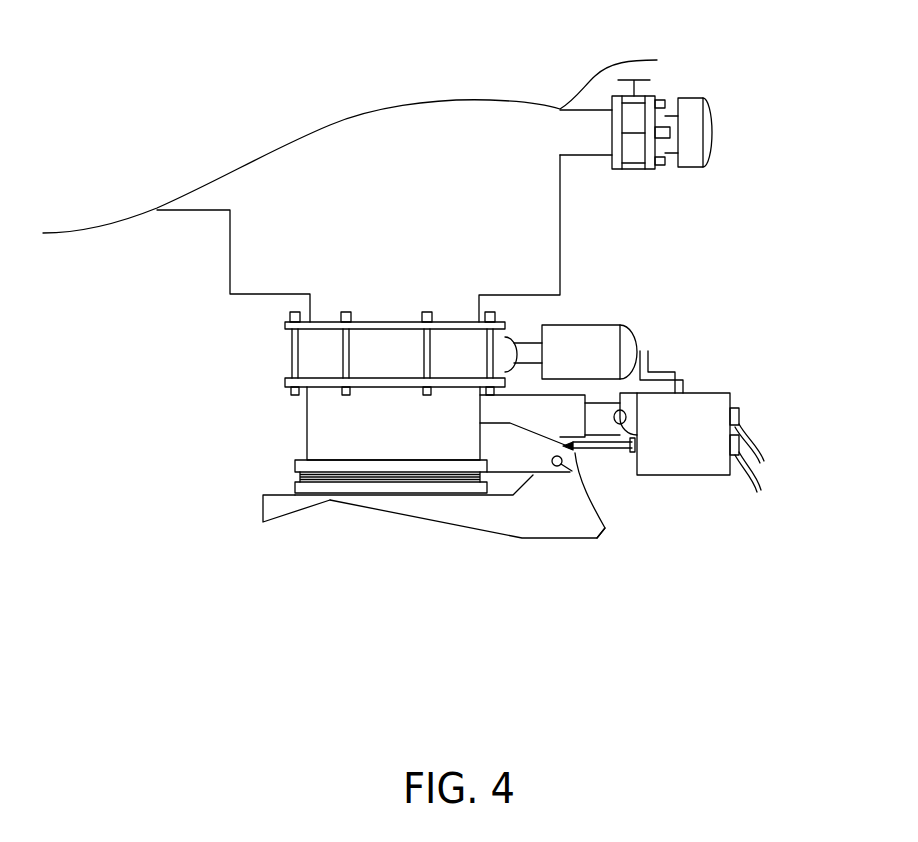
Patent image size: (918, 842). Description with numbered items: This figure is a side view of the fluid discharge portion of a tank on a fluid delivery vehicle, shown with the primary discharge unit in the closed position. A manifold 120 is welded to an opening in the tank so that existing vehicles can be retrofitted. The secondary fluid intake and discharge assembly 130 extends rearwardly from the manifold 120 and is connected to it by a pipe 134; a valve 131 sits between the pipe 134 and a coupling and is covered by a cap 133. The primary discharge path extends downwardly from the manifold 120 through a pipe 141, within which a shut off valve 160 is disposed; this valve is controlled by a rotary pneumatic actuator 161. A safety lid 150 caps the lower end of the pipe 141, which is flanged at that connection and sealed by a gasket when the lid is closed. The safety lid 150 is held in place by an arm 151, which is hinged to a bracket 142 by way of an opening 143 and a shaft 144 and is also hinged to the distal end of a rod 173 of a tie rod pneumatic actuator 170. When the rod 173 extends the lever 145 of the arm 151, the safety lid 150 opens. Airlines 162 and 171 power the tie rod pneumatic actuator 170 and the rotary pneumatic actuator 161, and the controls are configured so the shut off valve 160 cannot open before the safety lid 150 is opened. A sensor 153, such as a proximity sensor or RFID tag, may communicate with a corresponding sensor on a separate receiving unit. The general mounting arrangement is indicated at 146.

The manifold 120 is at (560, 257).
The secondary fluid intake and discharge assembly 130 is at (680, 135).
The valve 131 is at (635, 150).
The cap 133 is at (700, 133).
The pipe 134 is at (573, 139).
The pipe 141 is at (327, 440).
The bracket 142 is at (525, 455).
The opening 143 is at (577, 462).
The shaft 144 is at (607, 530).
The lever 145 is at (565, 470).
The mounting assembly 146 is at (242, 419).
The safety lid 150 is at (373, 487).
The arm 151 is at (475, 517).
The sensor 153 is at (262, 508).
The shut off valve 160 is at (303, 347).
The rotary pneumatic actuator 161 is at (625, 342).
The airline 162 is at (652, 372).
The tie rod pneumatic actuator 170 is at (713, 432).
The airline 171 is at (757, 480).
The rod 173 is at (607, 450).